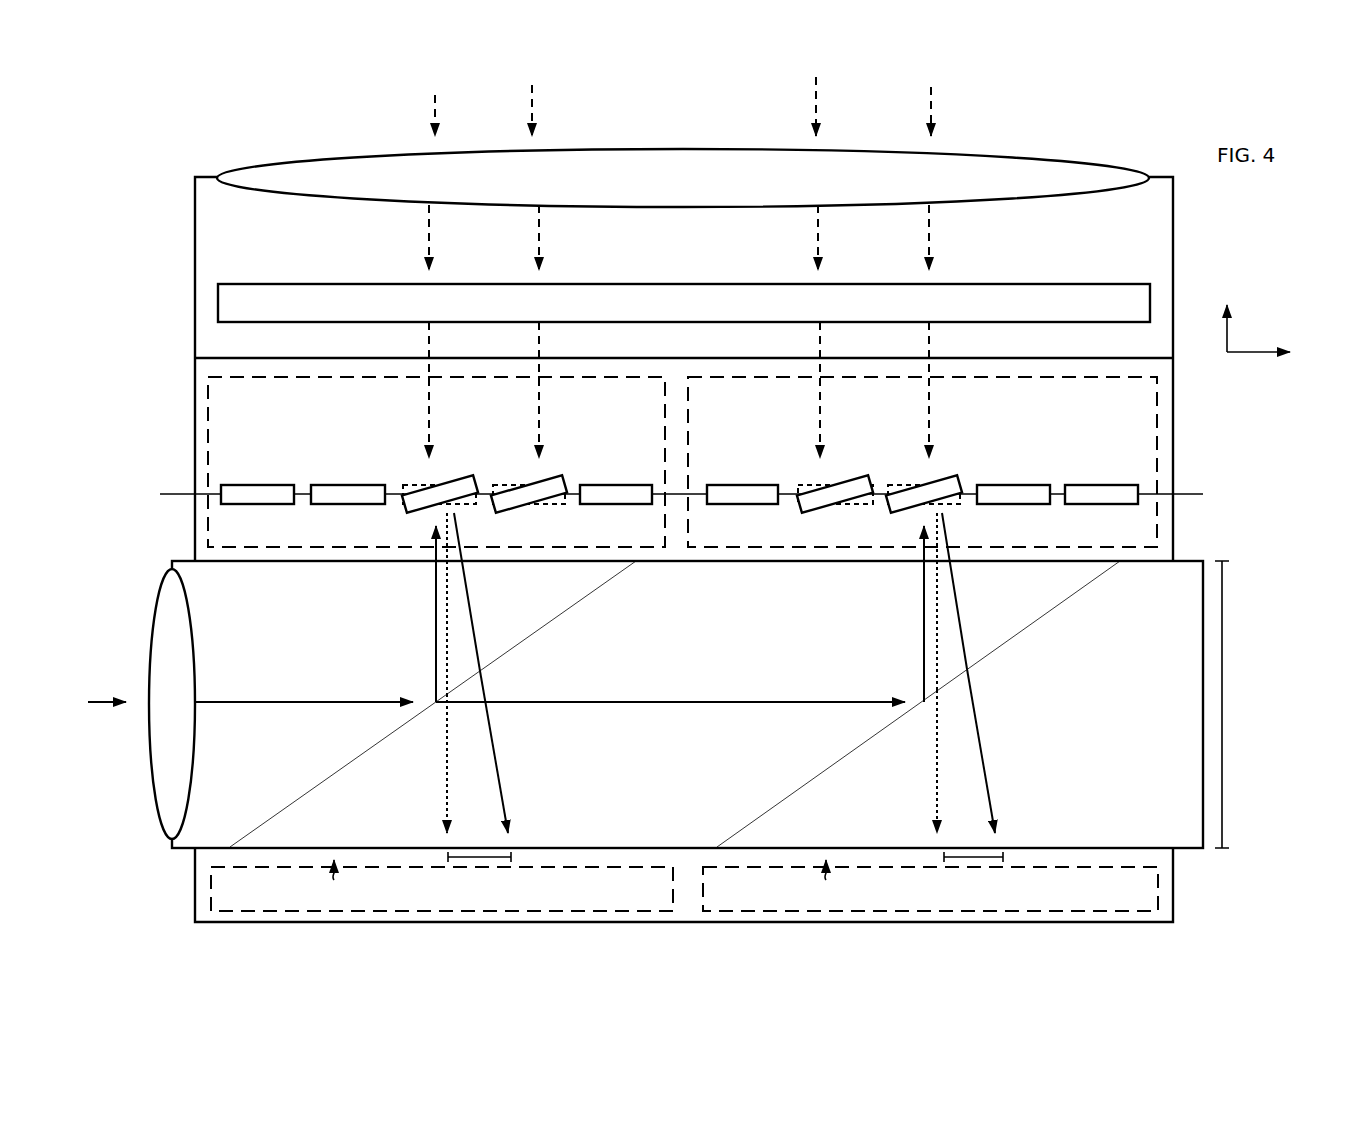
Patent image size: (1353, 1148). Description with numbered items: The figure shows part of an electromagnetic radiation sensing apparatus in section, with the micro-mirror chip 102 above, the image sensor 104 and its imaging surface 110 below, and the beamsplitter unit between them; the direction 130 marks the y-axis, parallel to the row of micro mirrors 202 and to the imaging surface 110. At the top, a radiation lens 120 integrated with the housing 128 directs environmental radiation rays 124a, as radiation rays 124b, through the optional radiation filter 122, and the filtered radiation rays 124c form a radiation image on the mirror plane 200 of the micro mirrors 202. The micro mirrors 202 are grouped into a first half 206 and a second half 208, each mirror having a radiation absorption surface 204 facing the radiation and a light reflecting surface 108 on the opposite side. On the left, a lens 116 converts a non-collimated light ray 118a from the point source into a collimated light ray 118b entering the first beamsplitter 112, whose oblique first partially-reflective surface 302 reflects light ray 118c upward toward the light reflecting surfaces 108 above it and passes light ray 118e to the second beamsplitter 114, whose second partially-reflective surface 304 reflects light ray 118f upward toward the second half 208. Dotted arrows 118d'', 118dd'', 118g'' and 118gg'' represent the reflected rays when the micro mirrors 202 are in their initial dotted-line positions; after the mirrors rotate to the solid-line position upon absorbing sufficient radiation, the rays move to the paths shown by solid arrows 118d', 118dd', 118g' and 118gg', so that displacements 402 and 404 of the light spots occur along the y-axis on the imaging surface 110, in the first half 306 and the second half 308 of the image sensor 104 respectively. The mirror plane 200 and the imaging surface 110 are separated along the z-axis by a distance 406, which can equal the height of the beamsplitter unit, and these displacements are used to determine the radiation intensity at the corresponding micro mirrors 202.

The micro-mirror chip 102 is at (218, 358).
The image sensor 104 is at (195, 888).
The light reflecting surfaces 108 is at (686, 521).
The imaging surface 110 is at (553, 826).
The beamsplitter 112 is at (325, 883).
The beamsplitter 114 is at (818, 883).
The lens 116 is at (162, 562).
The light ray 118a is at (107, 700).
The collimated light ray 118b is at (259, 700).
The light ray 118c is at (436, 640).
The solid arrow light ray 118d' is at (504, 592).
The dotted arrow light ray 118d'' is at (507, 603).
The solid arrow light ray 118dd' is at (540, 752).
The dotted arrow light ray 118dd'' is at (529, 763).
The light ray 118e is at (702, 702).
The light ray 118f is at (924, 640).
The solid arrow light ray 118g' is at (991, 591).
The dotted arrow light ray 118g'' is at (989, 601).
The solid arrow light ray 118gg' is at (1021, 749).
The dotted arrow light ray 118gg'' is at (1011, 761).
The radiation lens 120 is at (683, 178).
The radiation filter 122 is at (684, 303).
The environmental radiation rays 124a is at (433, 107).
The radiation rays 124b is at (428, 262).
The radiation rays 124c is at (428, 412).
The housing 128 is at (196, 253).
The direction 130 is at (1250, 352).
The mirror plane 200 is at (182, 494).
The micro mirrors 202 is at (470, 462).
The radiation absorption surfaces 204 is at (417, 490).
The first half of the micro mirrors 206 is at (436, 462).
The second half of the micro mirrors 208 is at (922, 462).
The first partially-reflective surface 302 is at (302, 793).
The second partially-reflective surface 304 is at (780, 798).
The first half of the image sensor 306 is at (442, 889).
The second half of the image sensor 308 is at (930, 889).
The displacement 402 is at (479, 862).
The displacement 404 is at (972, 862).
The distance 406 is at (1222, 712).